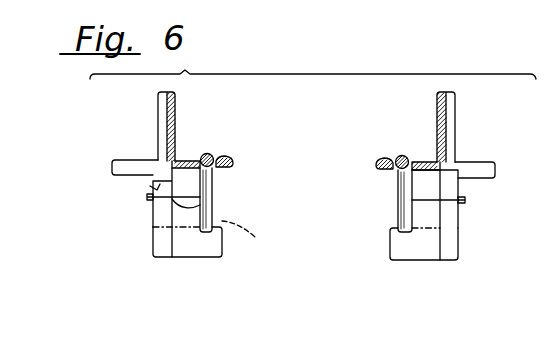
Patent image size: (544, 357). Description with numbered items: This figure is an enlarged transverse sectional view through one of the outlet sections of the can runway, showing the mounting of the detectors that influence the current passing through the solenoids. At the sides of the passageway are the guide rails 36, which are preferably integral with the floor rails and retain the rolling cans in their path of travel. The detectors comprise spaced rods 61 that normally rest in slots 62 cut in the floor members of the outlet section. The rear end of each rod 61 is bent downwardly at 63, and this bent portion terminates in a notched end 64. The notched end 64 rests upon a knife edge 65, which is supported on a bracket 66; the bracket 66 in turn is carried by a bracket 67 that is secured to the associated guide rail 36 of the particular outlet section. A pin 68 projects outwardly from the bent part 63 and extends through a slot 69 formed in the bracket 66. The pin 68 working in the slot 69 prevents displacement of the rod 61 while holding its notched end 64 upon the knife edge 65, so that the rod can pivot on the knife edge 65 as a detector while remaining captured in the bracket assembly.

The guide rail 36 is at (177, 102).
The rod 61 is at (206, 153).
The slot 62 is at (232, 155).
The downwardly bent rear end 63 is at (212, 181).
The notched end 64 is at (248, 234).
The knife edge 65 is at (223, 250).
The bracket 66 is at (158, 216).
The bracket 67 is at (163, 125).
The pin 68 is at (212, 210).
The slot 69 is at (150, 186).